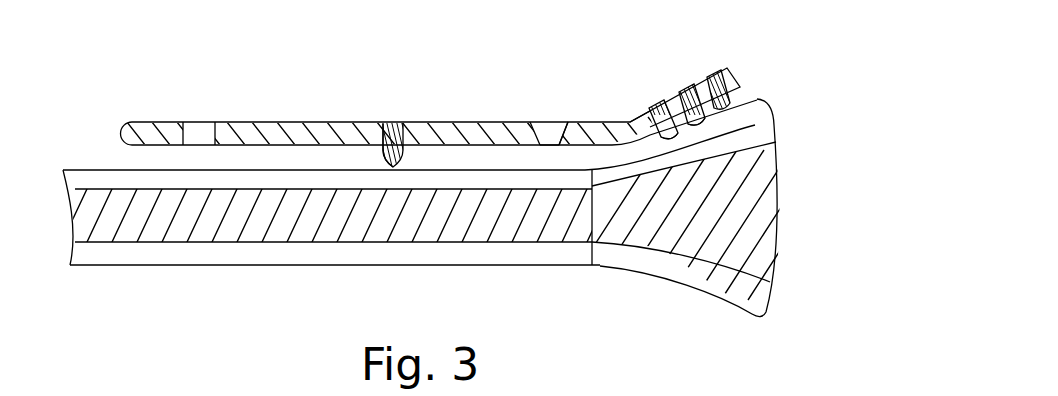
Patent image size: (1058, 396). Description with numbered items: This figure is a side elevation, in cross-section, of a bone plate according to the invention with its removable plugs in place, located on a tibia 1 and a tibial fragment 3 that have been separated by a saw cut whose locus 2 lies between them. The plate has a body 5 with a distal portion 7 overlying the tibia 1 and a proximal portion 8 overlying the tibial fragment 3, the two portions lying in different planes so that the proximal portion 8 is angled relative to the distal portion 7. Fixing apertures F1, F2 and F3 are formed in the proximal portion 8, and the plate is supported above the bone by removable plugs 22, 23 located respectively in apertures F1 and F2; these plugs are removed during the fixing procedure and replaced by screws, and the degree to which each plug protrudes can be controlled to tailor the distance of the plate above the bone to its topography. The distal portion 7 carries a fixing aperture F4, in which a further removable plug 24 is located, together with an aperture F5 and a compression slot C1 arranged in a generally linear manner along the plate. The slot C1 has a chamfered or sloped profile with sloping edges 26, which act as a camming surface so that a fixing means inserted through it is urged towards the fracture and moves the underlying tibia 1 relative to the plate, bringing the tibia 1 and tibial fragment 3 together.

The tibia 1 is at (113, 180).
The cut 2 is at (592, 255).
The tibial fragment 3 is at (677, 270).
The body 5 is at (473, 133).
The distal portion 7 is at (537, 122).
The proximal portion 8 is at (642, 115).
The removable plug 22 is at (676, 134).
The removable plug 23 is at (706, 112).
The removable plug 24 is at (395, 123).
The sloping edges 26 is at (545, 146).
The compression slot C1 is at (552, 130).
The fixing aperture F1 is at (682, 90).
The fixing aperture F2 is at (657, 107).
The fixing aperture F3 is at (710, 76).
The fixing aperture F4 is at (395, 123).
The fixing aperture F5 is at (200, 133).